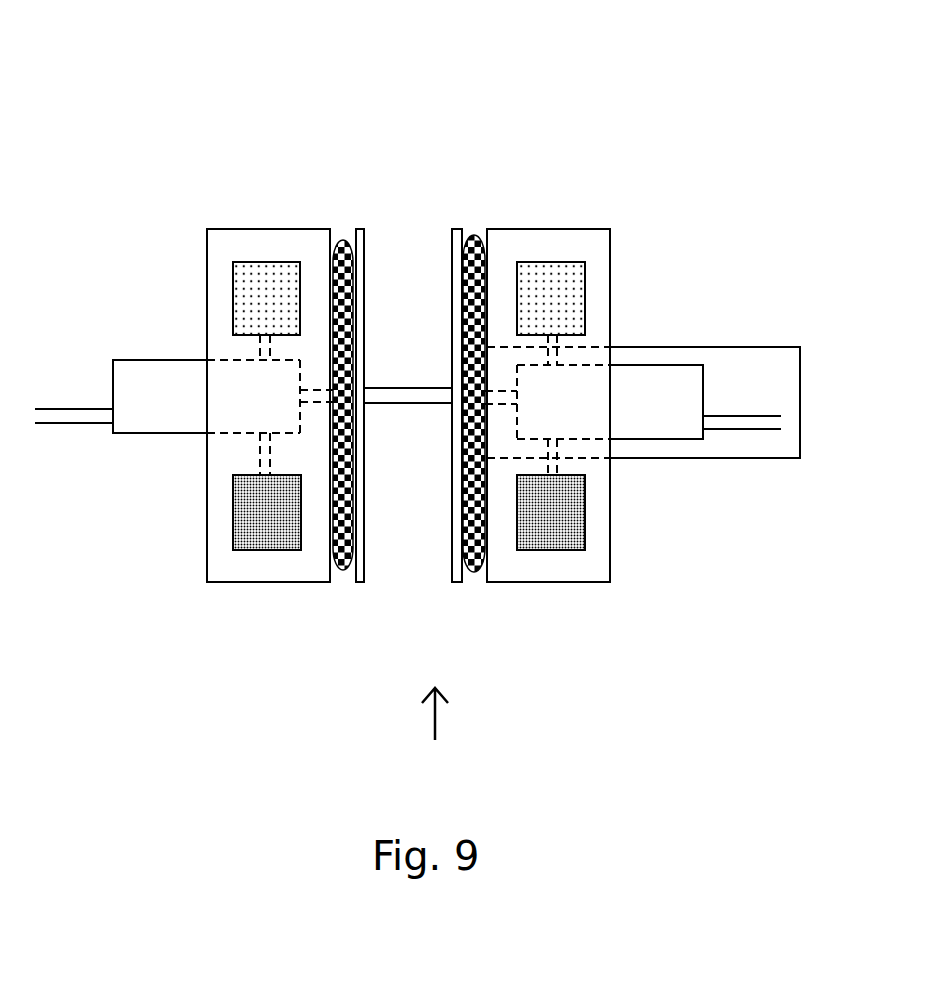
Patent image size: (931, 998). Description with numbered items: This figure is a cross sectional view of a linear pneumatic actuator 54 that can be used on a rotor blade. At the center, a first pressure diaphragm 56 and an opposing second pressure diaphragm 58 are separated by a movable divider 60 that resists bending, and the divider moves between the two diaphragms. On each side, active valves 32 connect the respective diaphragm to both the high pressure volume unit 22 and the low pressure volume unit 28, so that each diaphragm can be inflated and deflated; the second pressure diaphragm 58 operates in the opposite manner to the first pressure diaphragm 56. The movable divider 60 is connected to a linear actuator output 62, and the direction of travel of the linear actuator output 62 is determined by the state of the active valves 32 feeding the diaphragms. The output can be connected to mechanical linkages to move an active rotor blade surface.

The high pressure volume unit 22 is at (267, 545).
The low pressure volume unit 28 is at (265, 267).
The active valves 32 is at (143, 360).
The linear pneumatic actuator 54 is at (435, 748).
The first pressure diaphragm 56 is at (478, 240).
The second pressure diaphragm 58 is at (342, 240).
The movable divider 60 is at (400, 388).
The linear actuator output 62 is at (725, 458).